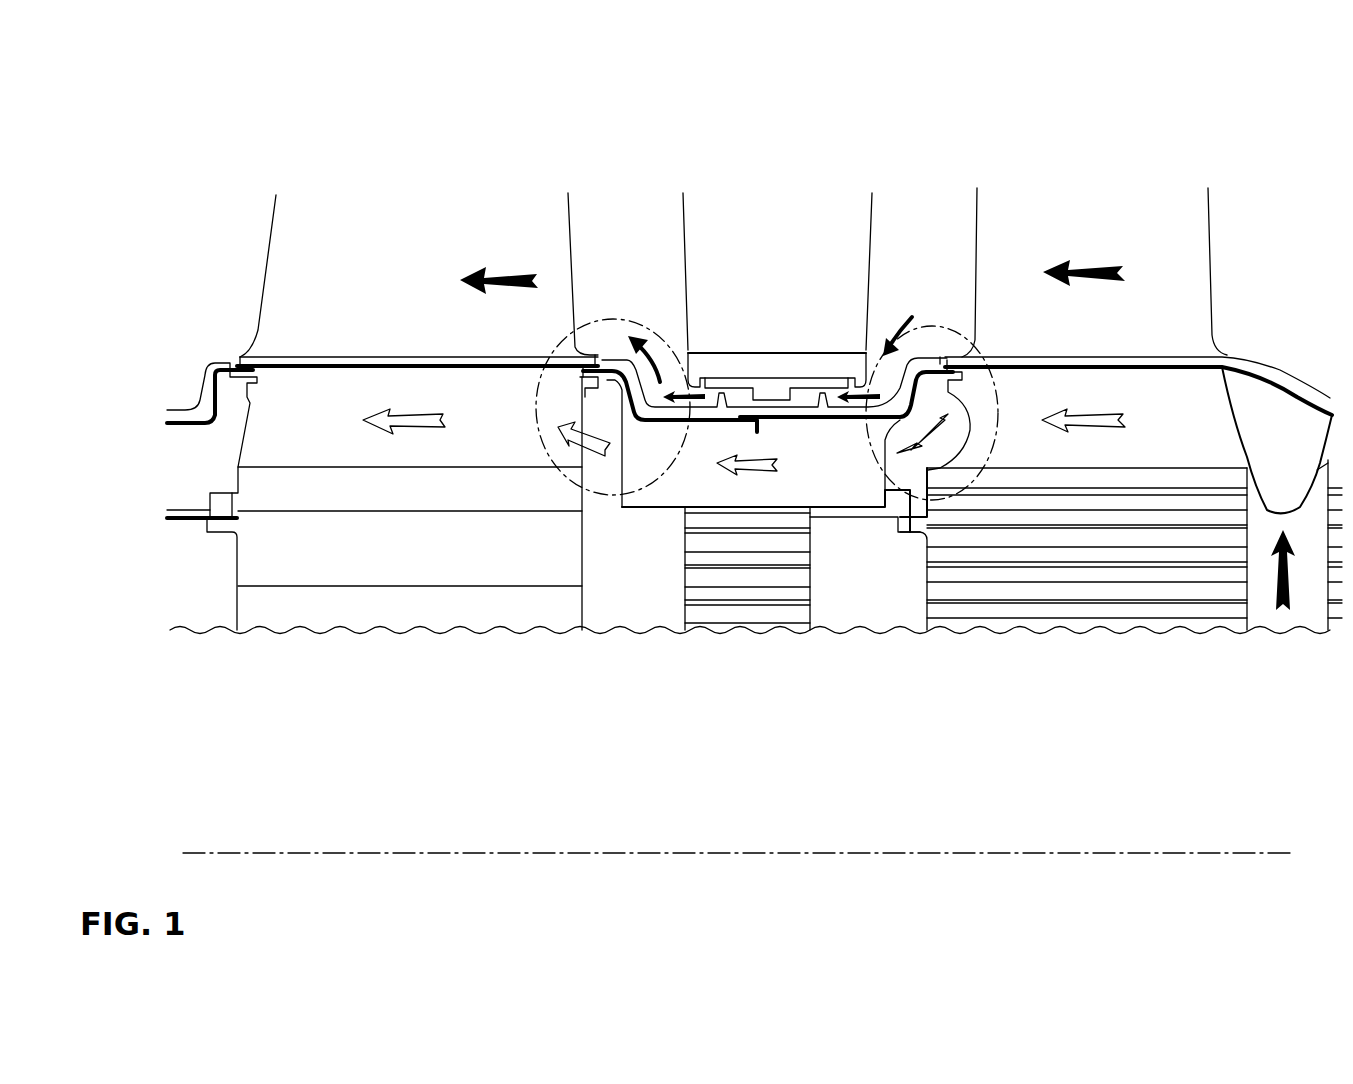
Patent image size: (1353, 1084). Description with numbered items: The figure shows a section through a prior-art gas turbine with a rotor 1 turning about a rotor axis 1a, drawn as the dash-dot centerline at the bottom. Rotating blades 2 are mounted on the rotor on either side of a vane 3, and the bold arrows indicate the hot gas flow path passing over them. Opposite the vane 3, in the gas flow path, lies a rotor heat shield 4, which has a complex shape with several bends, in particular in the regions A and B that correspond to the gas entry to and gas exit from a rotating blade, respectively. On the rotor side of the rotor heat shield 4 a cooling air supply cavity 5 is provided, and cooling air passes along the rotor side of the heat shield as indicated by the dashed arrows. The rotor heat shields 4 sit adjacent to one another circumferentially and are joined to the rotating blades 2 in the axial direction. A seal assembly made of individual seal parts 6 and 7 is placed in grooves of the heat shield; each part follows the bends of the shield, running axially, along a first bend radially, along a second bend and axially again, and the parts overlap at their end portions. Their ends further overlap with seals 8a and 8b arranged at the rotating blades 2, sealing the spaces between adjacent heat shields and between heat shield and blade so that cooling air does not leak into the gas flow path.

The rotor 1 is at (500, 202).
The rotor axis 1a is at (480, 850).
The rotating blades 2 is at (347, 245).
The vane 3 is at (732, 243).
The rotor heat shield 4 is at (750, 488).
The cooling air supply cavity 5 is at (1262, 572).
The seal part 6 is at (840, 423).
The seal part 7 is at (660, 427).
The seal 8a is at (1016, 372).
The seal 8b is at (325, 372).
The region of gas entry A is at (930, 330).
The region of gas exit B is at (640, 330).